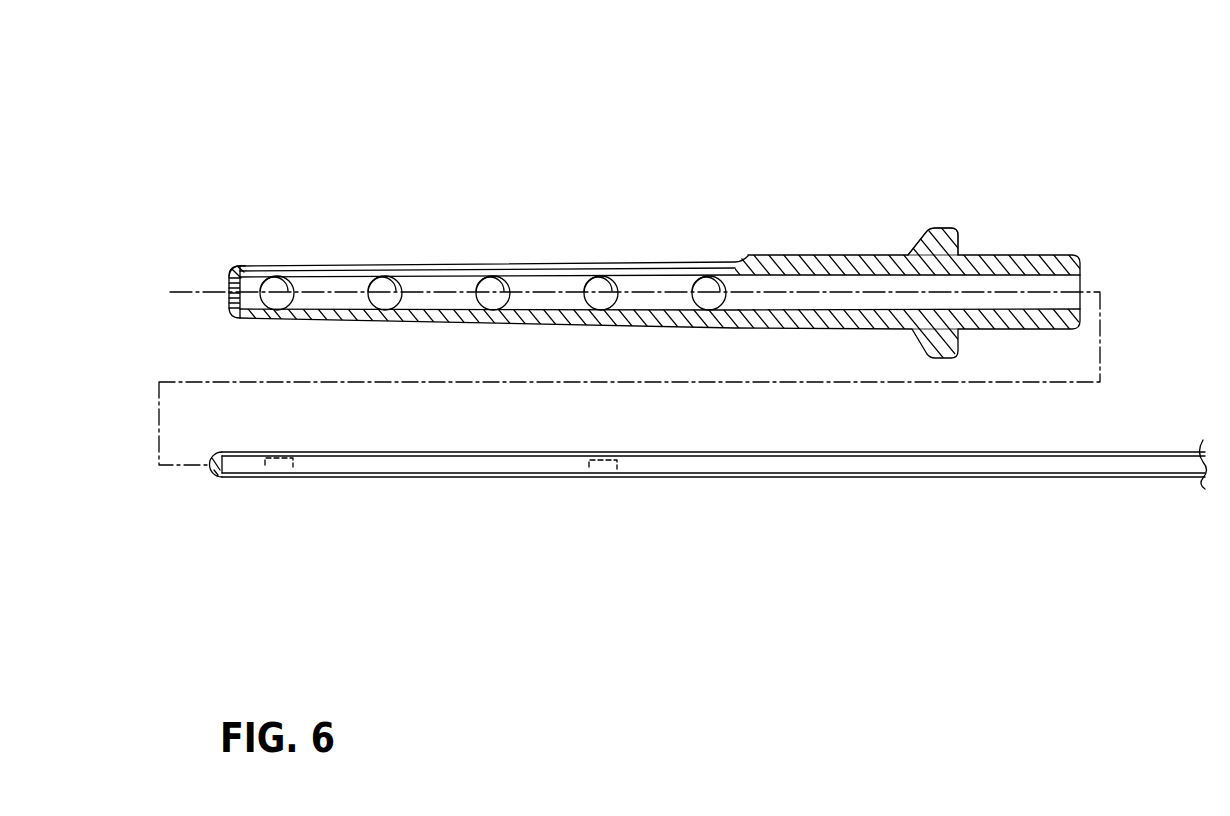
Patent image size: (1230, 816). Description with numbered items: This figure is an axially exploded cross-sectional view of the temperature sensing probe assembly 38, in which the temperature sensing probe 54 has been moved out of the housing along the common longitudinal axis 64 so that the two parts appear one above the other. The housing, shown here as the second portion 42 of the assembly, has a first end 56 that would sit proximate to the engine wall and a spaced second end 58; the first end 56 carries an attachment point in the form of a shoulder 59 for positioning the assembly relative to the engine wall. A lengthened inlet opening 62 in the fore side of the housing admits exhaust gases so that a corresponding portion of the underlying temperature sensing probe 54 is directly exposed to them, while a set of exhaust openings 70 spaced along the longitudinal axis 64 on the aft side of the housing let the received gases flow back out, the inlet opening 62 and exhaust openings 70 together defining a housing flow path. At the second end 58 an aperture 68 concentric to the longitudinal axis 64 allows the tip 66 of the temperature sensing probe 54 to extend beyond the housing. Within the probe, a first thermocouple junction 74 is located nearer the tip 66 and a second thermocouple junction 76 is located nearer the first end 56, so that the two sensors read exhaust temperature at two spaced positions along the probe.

The temperature sensing probe assembly 38 is at (646, 51).
The second portion 42 is at (849, 172).
The temperature sensing probe 54 is at (927, 460).
The first end 56 is at (901, 253).
The second end 58 is at (224, 262).
The shoulder 59 is at (941, 232).
The inlet opening 62 is at (830, 254).
The longitudinal axis 64 is at (349, 381).
The tip 66 is at (208, 477).
The aperture 68 is at (221, 314).
The exhaust openings 70 is at (405, 283).
The first thermocouple junction 74 is at (312, 481).
The second thermocouple junction 76 is at (634, 478).